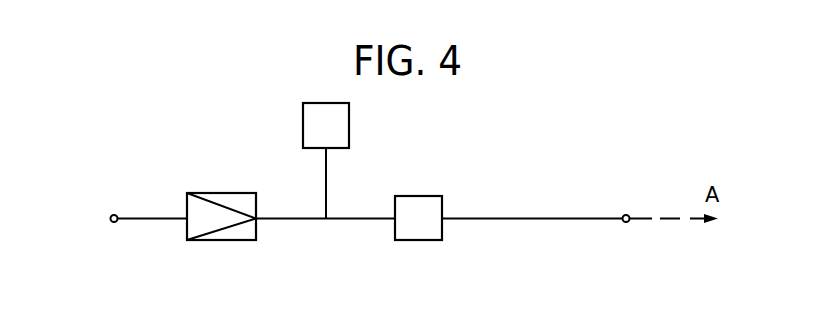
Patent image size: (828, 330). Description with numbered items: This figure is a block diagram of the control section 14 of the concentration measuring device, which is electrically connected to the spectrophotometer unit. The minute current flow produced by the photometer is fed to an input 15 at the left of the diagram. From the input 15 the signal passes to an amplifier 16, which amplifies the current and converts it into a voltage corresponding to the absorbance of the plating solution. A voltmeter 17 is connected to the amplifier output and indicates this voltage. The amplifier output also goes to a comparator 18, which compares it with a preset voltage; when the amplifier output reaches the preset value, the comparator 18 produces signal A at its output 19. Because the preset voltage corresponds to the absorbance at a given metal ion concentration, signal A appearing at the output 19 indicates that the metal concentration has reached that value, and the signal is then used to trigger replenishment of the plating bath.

The control section 14 is at (399, 139).
The input 15 is at (115, 214).
The amplifier 16 is at (213, 193).
The voltmeter 17 is at (303, 128).
The comparator 18 is at (405, 203).
The output 19 is at (628, 214).